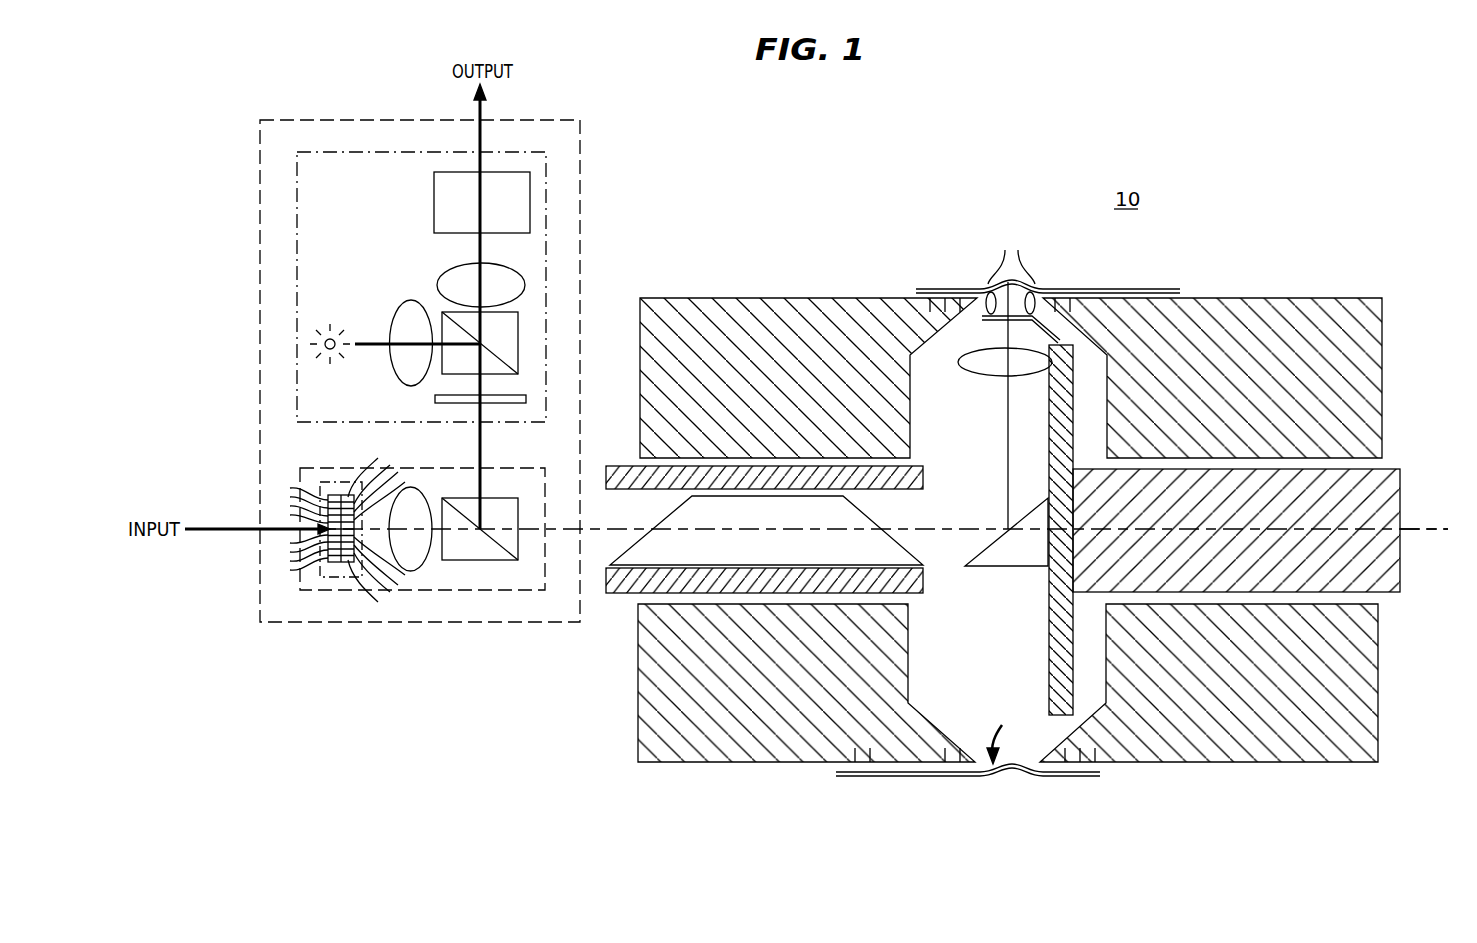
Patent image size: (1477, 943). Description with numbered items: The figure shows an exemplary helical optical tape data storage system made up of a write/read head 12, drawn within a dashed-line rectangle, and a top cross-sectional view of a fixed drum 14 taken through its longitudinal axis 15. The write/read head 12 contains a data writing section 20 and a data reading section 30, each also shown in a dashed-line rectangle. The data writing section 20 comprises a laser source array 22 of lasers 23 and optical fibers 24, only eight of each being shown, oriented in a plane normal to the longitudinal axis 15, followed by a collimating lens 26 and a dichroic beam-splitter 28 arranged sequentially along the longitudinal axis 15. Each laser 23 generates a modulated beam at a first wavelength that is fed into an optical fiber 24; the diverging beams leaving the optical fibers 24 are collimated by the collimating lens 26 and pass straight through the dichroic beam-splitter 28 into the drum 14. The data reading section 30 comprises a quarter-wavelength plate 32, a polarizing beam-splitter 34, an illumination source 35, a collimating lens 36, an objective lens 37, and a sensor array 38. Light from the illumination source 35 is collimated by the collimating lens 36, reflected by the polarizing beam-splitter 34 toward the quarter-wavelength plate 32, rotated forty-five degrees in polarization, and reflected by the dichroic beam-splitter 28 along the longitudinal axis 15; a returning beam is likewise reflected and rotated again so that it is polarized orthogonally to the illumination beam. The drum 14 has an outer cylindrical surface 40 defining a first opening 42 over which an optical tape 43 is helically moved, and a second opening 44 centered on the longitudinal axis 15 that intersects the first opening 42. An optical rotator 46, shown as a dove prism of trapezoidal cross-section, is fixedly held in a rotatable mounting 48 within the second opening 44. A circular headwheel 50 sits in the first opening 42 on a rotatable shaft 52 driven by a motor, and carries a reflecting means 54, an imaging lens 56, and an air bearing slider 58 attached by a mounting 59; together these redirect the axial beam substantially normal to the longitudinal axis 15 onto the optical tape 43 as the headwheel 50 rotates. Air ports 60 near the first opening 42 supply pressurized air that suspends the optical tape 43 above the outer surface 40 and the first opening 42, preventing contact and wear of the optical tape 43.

The write/read head 12 is at (428, 120).
The drum 14 is at (700, 312).
The longitudinal axis 15 is at (1430, 529).
The data writing section 20 is at (483, 580).
The laser source array 22 is at (337, 575).
The lasers 23 is at (296, 527).
The optical fibers 24 is at (378, 529).
The collimating lens 26 is at (412, 498).
The dichroic beam-splitter 28 is at (500, 498).
The data reading section 30 is at (338, 162).
The quarter-wavelength plate 32 is at (440, 400).
The polarizing beam-splitter 34 is at (506, 352).
The illumination source 35 is at (323, 358).
The collimating lens 36 is at (401, 316).
The objective lens 37 is at (455, 282).
The sensor array 38 is at (434, 198).
The outer cylindrical surface 40 is at (822, 298).
The first opening 42 is at (1008, 736).
The optical tape 43 is at (1118, 290).
The second opening 44 is at (630, 462).
The optical rotator 46 is at (690, 510).
The rotatable mounting 48 is at (925, 575).
The circular headwheel 50 is at (1049, 645).
The rotatable shaft 52 is at (1395, 565).
The reflecting means 54 is at (1020, 558).
The imaging lens 56 is at (990, 375).
The air bearing slider 58 is at (1011, 252).
The mounting 59 is at (990, 321).
The air ports 60 is at (935, 310).